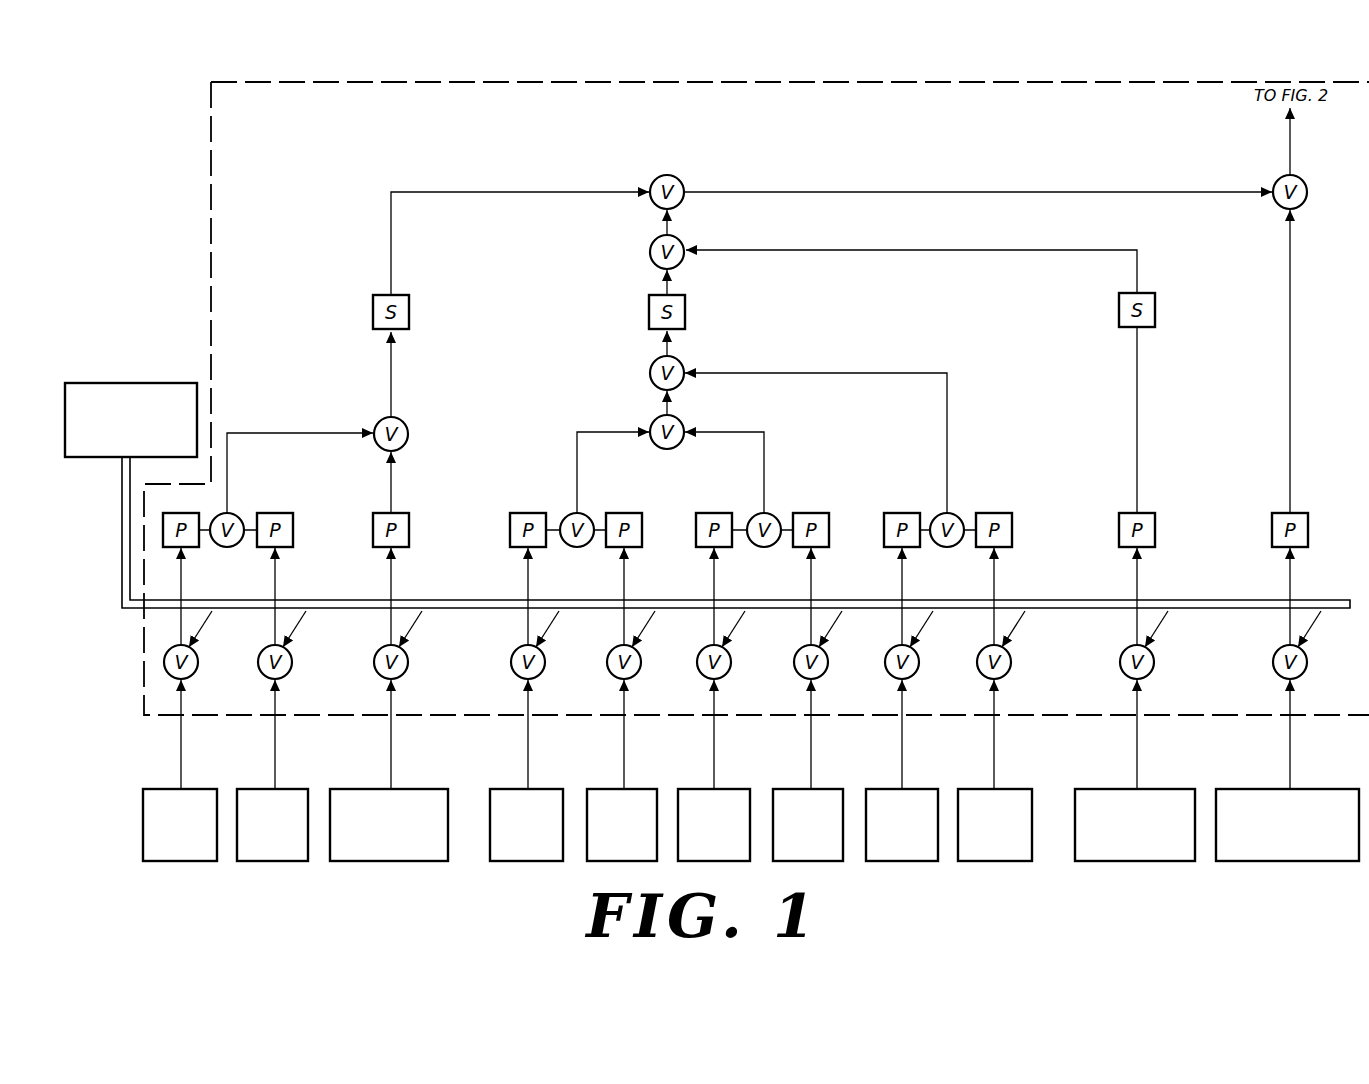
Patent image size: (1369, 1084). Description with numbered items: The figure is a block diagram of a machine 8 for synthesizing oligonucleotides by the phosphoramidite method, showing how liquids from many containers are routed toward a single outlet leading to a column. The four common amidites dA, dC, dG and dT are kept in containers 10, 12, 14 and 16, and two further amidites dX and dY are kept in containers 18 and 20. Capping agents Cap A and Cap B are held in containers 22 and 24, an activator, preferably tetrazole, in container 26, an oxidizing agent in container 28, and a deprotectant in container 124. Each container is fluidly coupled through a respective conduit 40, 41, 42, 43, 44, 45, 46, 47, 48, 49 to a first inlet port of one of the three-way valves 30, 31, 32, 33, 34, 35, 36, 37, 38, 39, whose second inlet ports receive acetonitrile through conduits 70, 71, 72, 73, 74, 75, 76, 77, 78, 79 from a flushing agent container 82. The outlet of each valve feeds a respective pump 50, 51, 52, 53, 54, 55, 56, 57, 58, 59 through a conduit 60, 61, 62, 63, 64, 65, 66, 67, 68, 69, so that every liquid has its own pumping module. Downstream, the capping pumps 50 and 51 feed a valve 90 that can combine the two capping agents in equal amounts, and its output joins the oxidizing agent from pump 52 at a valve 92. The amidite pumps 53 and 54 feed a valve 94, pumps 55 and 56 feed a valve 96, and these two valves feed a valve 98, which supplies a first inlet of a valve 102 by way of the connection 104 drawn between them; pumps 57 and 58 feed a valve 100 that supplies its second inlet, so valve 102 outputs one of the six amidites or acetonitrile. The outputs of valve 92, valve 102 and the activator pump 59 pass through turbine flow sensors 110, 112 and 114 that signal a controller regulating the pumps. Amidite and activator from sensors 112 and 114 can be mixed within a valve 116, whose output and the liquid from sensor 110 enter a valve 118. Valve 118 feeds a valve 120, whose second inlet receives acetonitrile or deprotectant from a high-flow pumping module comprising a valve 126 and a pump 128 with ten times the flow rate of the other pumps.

The machine 8 is at (767, 82).
The container 10 is at (549, 789).
The container 12 is at (644, 789).
The container 14 is at (731, 789).
The container 16 is at (821, 789).
The container 18 is at (921, 789).
The container 20 is at (1014, 789).
The container 22 is at (192, 789).
The container 24 is at (296, 789).
The container 26 is at (1168, 789).
The container 28 is at (426, 789).
The valve 30 is at (196, 670).
The valve 31 is at (290, 670).
The valve 32 is at (406, 670).
The valve 33 is at (543, 670).
The valve 34 is at (639, 670).
The valve 35 is at (729, 670).
The valve 36 is at (826, 670).
The valve 37 is at (917, 670).
The valve 38 is at (1009, 670).
The valve 39 is at (1152, 670).
The conduit 40 is at (182, 754).
The conduit 41 is at (276, 754).
The conduit 42 is at (392, 754).
The conduit 43 is at (529, 754).
The conduit 44 is at (625, 754).
The conduit 45 is at (715, 754).
The conduit 46 is at (812, 754).
The conduit 47 is at (903, 754).
The conduit 48 is at (995, 754).
The conduit 49 is at (1138, 754).
The pump 50 is at (169, 513).
The pump 51 is at (263, 513).
The pump 52 is at (379, 513).
The pump 53 is at (516, 513).
The pump 54 is at (612, 513).
The pump 55 is at (702, 513).
The pump 56 is at (799, 513).
The pump 57 is at (890, 513).
The pump 58 is at (982, 513).
The pump 59 is at (1125, 513).
The conduit 60 is at (182, 586).
The conduit 61 is at (276, 586).
The conduit 62 is at (392, 586).
The conduit 63 is at (527, 586).
The conduit 64 is at (623, 586).
The conduit 65 is at (713, 586).
The conduit 66 is at (810, 586).
The conduit 67 is at (901, 586).
The conduit 68 is at (995, 586).
The conduit 69 is at (1138, 586).
The conduit 70 is at (209, 616).
The conduit 71 is at (303, 616).
The conduit 72 is at (419, 616).
The conduit 73 is at (556, 616).
The conduit 74 is at (652, 616).
The conduit 75 is at (742, 616).
The conduit 76 is at (839, 616).
The conduit 77 is at (930, 616).
The conduit 78 is at (1022, 616).
The conduit 79 is at (1165, 616).
The flushing agent container 82 is at (137, 383).
The valve 90 is at (229, 547).
The valve 92 is at (409, 433).
The valve 94 is at (578, 547).
The valve 96 is at (765, 547).
The valve 98 is at (672, 449).
The valve 100 is at (948, 547).
The valve 102 is at (651, 366).
The valve 104 is at (658, 422).
The flow sensor 110 is at (410, 311).
The flow sensor 112 is at (686, 311).
The flow sensor 114 is at (1156, 309).
The valve 116 is at (651, 251).
The valve 118 is at (679, 180).
The valve 120 is at (1303, 182).
The container 124 is at (1316, 789).
The valve 126 is at (1273, 661).
The pump 128 is at (1300, 513).